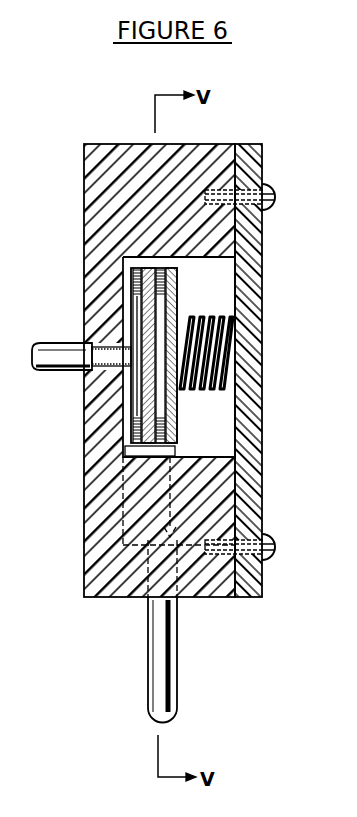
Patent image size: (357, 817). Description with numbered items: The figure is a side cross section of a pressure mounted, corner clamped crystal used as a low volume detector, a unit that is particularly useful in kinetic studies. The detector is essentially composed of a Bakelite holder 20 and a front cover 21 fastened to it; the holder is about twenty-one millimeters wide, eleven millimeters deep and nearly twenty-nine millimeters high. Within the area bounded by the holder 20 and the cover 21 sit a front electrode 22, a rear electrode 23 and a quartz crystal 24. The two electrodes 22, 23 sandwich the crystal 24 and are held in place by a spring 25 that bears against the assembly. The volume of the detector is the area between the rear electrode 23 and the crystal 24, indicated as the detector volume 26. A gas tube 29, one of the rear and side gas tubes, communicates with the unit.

The Bakelite holder 20 is at (92, 196).
The front cover 21 is at (258, 285).
The front electrode 22 is at (170, 284).
The rear electrode 23 is at (121, 280).
The quartz crystal 24 is at (153, 405).
The spring 25 is at (213, 326).
The detector volume 26 is at (137, 318).
The gas tube 29 is at (55, 370).